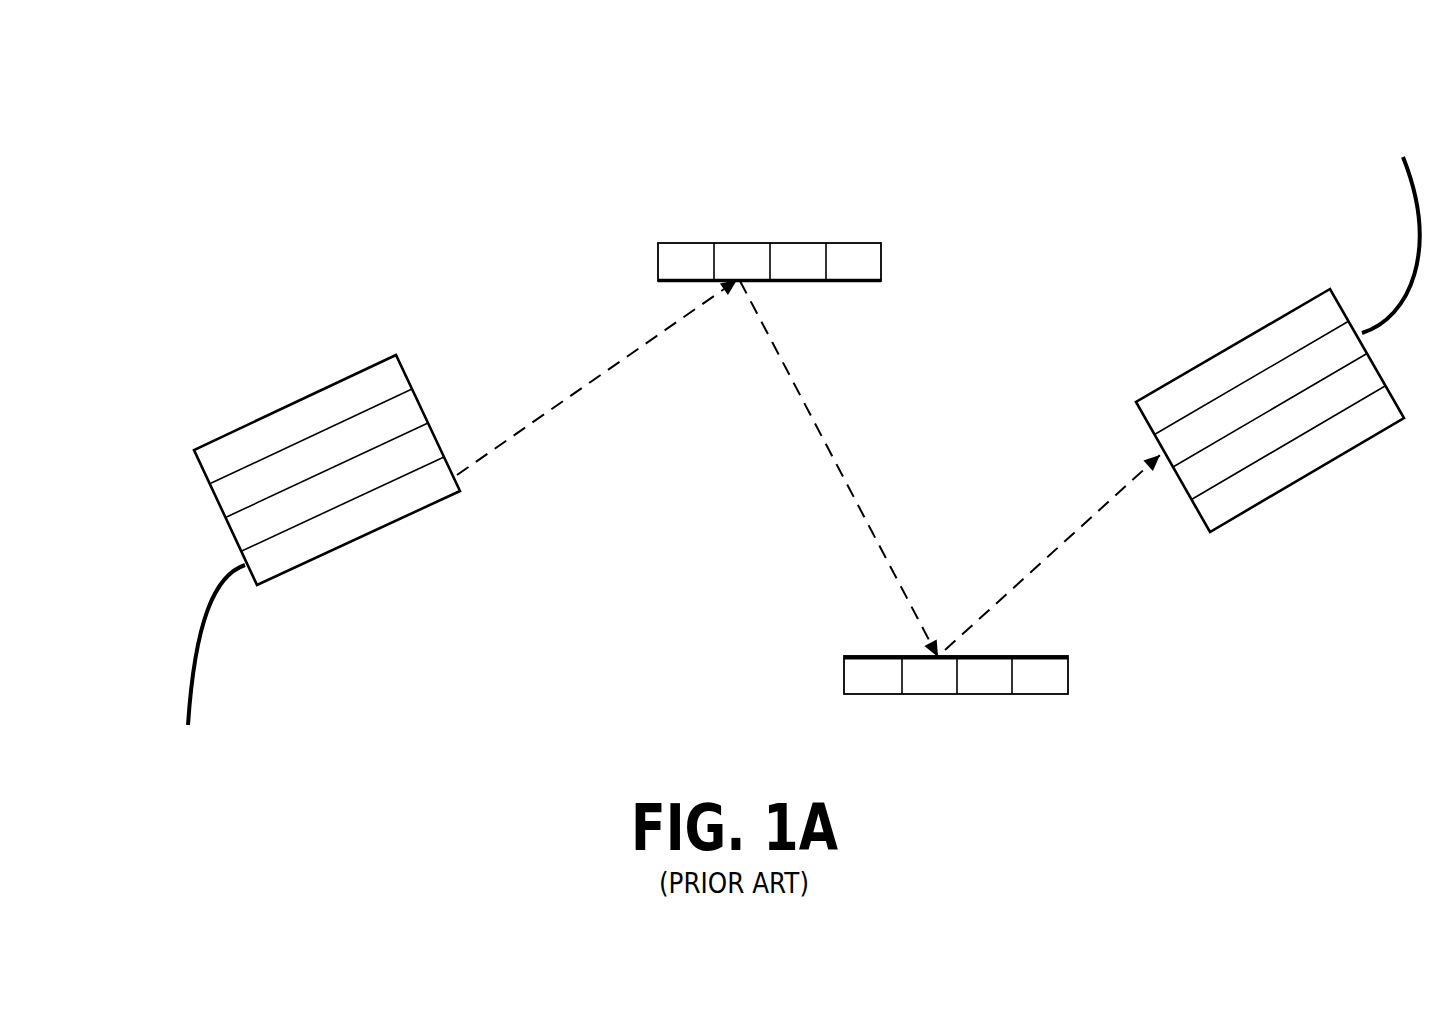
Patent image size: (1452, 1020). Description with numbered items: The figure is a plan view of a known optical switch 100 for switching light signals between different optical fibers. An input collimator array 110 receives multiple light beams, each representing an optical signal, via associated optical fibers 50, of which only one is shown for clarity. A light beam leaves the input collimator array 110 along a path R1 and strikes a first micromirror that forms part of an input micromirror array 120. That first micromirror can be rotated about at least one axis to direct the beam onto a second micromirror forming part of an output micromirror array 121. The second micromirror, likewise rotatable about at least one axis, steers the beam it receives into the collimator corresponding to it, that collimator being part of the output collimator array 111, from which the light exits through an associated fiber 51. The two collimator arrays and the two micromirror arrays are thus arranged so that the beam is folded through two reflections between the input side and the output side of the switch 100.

The optical switch 100 is at (1068, 110).
The input collimator array 110 is at (251, 395).
The output collimator array 111 is at (1198, 362).
The input micromirror array 120 is at (695, 242).
The output micromirror array 121 is at (846, 670).
The optical fiber 50 is at (216, 622).
The second fiber 51 is at (1403, 278).
The optical path R1 is at (623, 365).